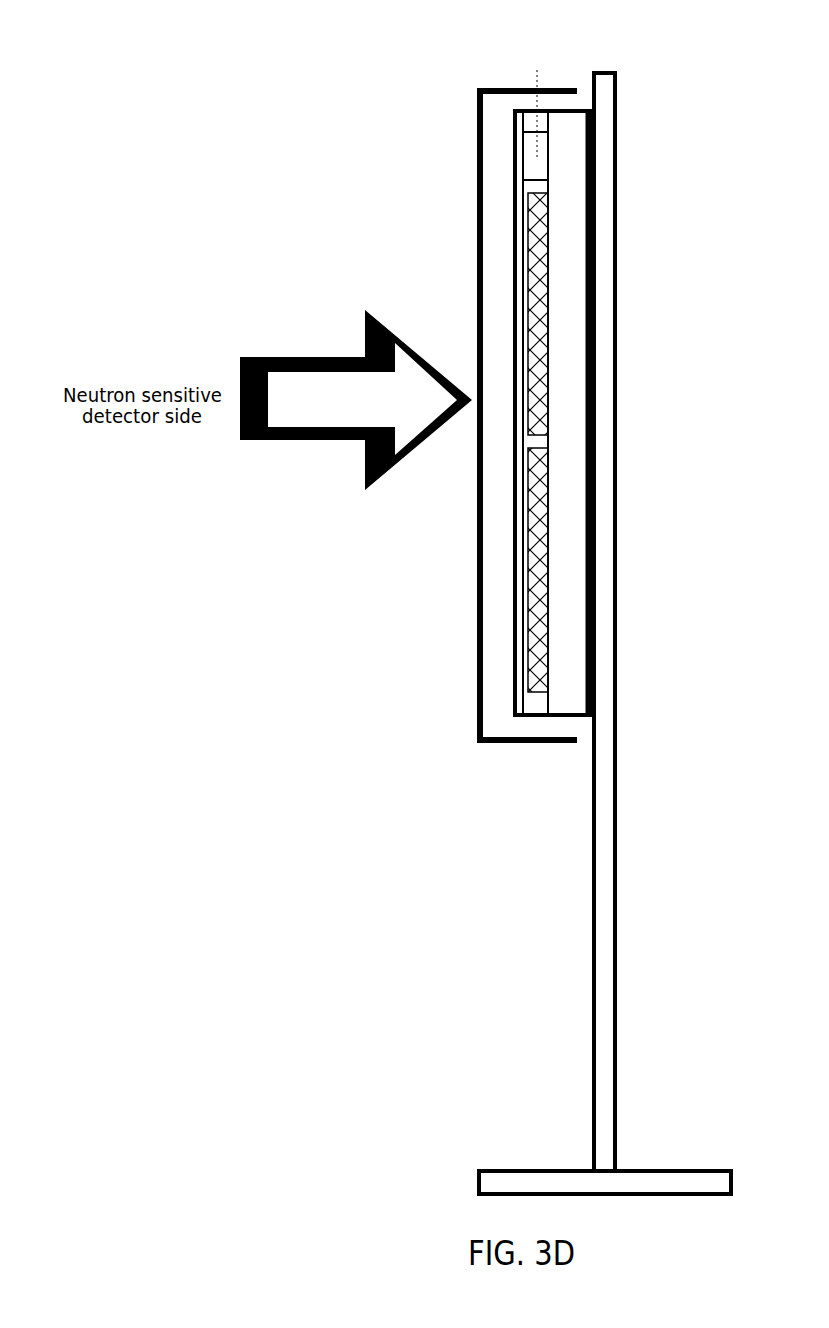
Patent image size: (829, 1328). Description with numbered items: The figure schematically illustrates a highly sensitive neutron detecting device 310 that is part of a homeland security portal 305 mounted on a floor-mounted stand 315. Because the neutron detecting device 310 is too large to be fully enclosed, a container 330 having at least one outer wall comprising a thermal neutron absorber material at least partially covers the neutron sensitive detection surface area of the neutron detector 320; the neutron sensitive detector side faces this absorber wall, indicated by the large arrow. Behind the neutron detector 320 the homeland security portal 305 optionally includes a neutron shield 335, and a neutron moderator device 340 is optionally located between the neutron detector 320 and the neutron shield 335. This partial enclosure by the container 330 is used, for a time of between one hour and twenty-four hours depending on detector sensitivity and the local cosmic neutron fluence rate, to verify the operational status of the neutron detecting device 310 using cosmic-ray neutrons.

The homeland security portal 305 is at (411, 69).
The neutron detecting device 310 is at (513, 163).
The floor-mounted stand 315 is at (605, 882).
The neutron detector 320 is at (513, 395).
The container 330 is at (477, 740).
The neutron shield 335 is at (588, 652).
The neutron moderator device 340 is at (570, 570).